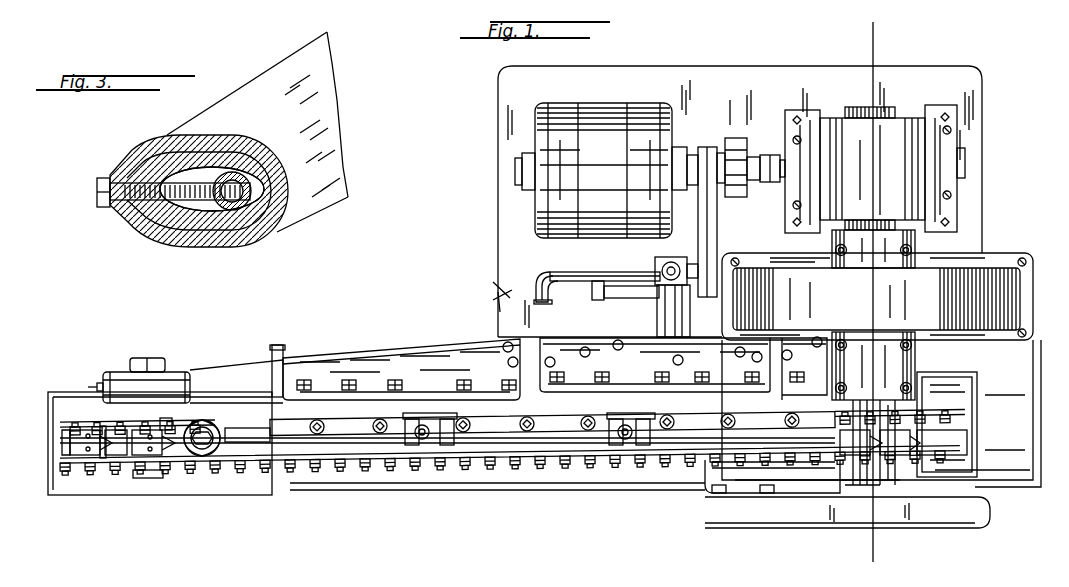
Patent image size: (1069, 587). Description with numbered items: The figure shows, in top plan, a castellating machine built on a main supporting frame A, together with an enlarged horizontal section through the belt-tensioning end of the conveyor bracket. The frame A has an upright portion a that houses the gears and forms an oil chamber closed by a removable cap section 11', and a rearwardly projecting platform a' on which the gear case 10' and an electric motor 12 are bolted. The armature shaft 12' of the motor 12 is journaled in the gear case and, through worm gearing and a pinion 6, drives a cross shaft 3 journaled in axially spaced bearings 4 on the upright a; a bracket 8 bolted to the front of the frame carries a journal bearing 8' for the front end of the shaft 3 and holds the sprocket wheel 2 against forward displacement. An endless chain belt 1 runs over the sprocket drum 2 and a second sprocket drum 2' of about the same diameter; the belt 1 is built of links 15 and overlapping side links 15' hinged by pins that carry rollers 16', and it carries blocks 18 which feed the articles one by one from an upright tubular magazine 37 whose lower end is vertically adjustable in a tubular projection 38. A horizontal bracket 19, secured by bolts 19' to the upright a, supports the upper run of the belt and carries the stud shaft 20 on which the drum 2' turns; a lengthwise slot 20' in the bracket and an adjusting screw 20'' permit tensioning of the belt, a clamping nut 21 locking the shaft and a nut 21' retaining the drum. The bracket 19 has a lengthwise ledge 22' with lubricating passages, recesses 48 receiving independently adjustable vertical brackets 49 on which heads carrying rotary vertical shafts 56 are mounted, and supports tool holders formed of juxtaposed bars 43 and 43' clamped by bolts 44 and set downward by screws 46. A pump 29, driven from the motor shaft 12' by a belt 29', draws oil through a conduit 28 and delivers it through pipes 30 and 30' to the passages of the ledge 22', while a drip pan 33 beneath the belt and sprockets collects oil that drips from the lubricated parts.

In FIG. 1, the endless chain belt 1 is at (72, 433).
In FIG. 1, the sprocket drum 2 is at (868, 475).
In FIG. 1, the sprocket drum 2' is at (113, 474).
In FIG. 1, the cross shaft 3 is at (878, 110).
In FIG. 1, the bearings 4 is at (12, 432).
In FIG. 1, the pinion 6 is at (876, 293).
In FIG. 1, the bracket 8 is at (640, 517).
In FIG. 1, the journal bearing 8' is at (895, 473).
In FIG. 1, the gear box 10' is at (875, 169).
In FIG. 1, the cap section 11' is at (877, 296).
In FIG. 1, the electric motor 12 is at (606, 170).
In FIG. 1, the armature shaft 12' is at (751, 163).
In FIG. 1, the links 15 is at (510, 498).
In FIG. 1, the links 15' is at (508, 444).
In FIG. 1, the rollers 16' is at (586, 429).
In FIG. 1, the blocks 18 is at (62, 455).
In FIG. 3, the horizontal bracket 19 is at (269, 132).
In FIG. 1, the horizontal bracket 19 is at (555, 362).
In FIG. 1, the bolts 19' is at (647, 353).
In FIG. 3, the stud shaft 20 is at (232, 226).
In FIG. 3, the lengthwise slot 20' is at (199, 207).
In FIG. 3, the adjusting screw 20'' is at (154, 192).
In FIG. 1, the clamping nut 21 is at (139, 367).
In FIG. 1, the nut 21' is at (149, 496).
In FIG. 1, the ledge 22' is at (272, 370).
In FIG. 1, the pipe or conduit 28 is at (631, 311).
In FIG. 1, the pump 29 is at (676, 262).
In FIG. 1, the belt 29' is at (723, 222).
In FIG. 1, the pipe 30 is at (605, 275).
In FIG. 1, the pipe 30' is at (537, 288).
In FIG. 1, the drip pan 33 is at (1020, 478).
In FIG. 1, the upright tubular magazine 37 is at (203, 448).
In FIG. 1, the tubular projection 38 is at (210, 456).
In FIG. 1, the bar 43 is at (258, 385).
In FIG. 1, the bar 43' is at (591, 480).
In FIG. 1, the clamping bolts 44 is at (262, 460).
In FIG. 1, the screws 46 is at (309, 425).
In FIG. 1, the recesses 48 is at (410, 414).
In FIG. 1, the vertical brackets 49 is at (440, 415).
In FIG. 1, the rotary vertical shaft 56 is at (422, 425).
In FIG. 1, the upright portion a is at (610, 324).
In FIG. 1, the platform a' is at (740, 186).
In FIG. 1, the main supporting frame A is at (491, 294).